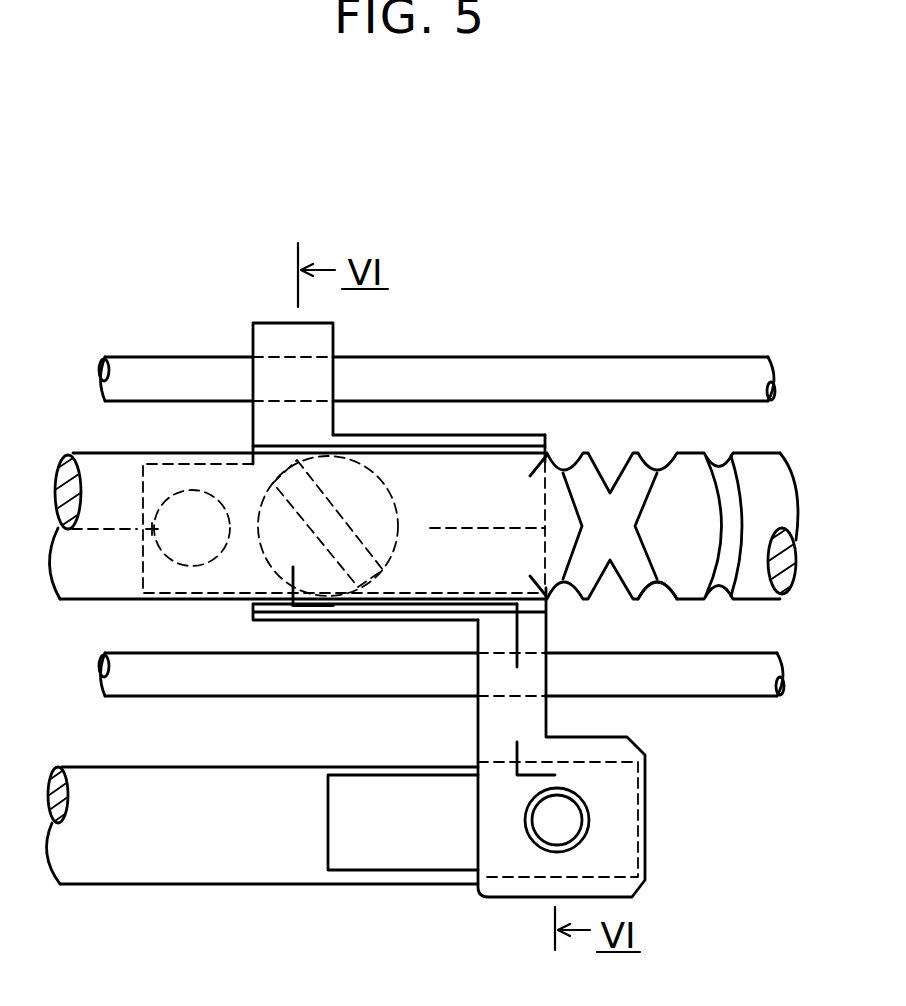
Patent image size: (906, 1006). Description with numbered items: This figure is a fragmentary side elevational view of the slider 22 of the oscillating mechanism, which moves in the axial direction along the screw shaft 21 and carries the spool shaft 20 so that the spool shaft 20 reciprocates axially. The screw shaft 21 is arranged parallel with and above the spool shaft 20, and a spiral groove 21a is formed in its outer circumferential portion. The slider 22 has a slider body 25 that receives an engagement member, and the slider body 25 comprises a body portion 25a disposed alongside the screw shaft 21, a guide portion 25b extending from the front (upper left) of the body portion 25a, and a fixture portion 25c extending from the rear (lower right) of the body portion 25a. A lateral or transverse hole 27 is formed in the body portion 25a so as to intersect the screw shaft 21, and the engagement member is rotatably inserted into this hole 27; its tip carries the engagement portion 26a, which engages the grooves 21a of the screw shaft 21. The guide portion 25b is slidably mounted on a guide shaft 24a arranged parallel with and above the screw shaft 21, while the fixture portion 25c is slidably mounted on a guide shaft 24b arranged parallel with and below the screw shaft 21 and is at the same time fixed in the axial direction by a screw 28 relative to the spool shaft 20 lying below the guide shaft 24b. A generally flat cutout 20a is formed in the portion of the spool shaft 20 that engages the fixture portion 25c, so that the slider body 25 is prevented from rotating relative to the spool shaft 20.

The spool shaft 20 is at (210, 790).
The cutout 20a is at (384, 848).
The screw shaft 21 is at (760, 466).
The spiral groove 21a is at (655, 580).
The slider 22 is at (472, 419).
The guide shaft 24a is at (527, 362).
The guide shaft 24b is at (746, 685).
The slider body 25 is at (404, 419).
The body portion 25a is at (513, 432).
The guide portion 25b is at (262, 352).
The fixture portion 25c is at (585, 745).
The engagement portion 26a is at (258, 500).
The transverse hole 27 is at (397, 507).
The screw 28 is at (568, 818).